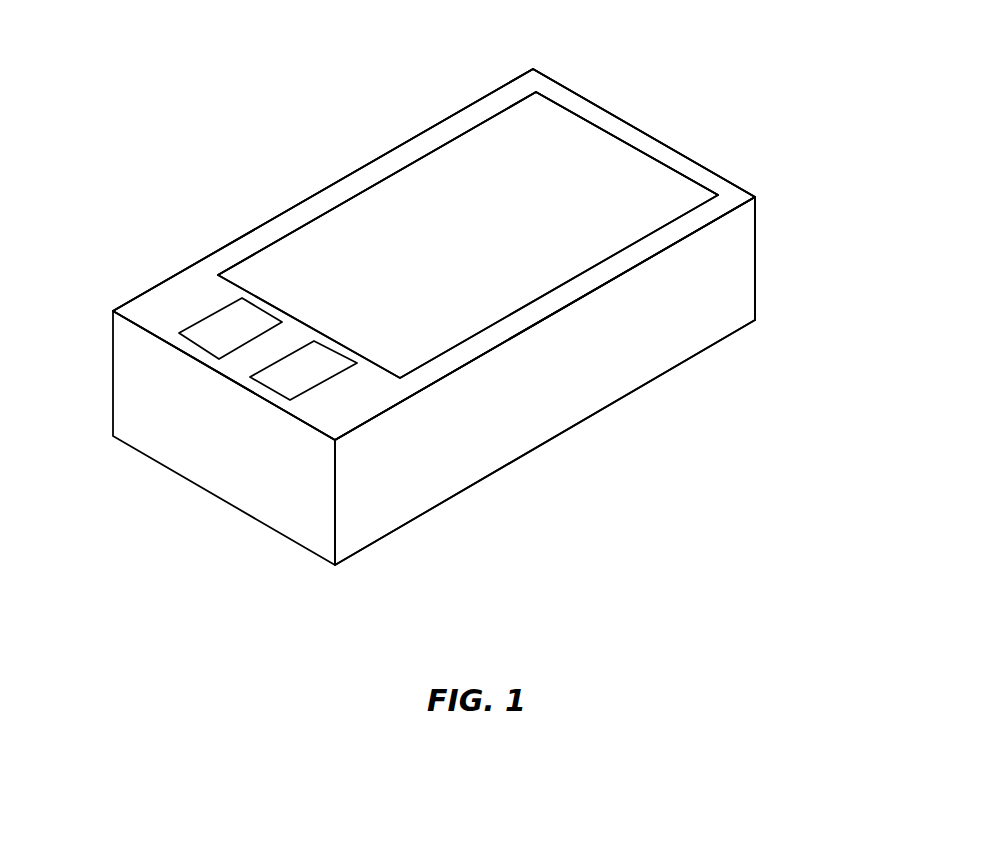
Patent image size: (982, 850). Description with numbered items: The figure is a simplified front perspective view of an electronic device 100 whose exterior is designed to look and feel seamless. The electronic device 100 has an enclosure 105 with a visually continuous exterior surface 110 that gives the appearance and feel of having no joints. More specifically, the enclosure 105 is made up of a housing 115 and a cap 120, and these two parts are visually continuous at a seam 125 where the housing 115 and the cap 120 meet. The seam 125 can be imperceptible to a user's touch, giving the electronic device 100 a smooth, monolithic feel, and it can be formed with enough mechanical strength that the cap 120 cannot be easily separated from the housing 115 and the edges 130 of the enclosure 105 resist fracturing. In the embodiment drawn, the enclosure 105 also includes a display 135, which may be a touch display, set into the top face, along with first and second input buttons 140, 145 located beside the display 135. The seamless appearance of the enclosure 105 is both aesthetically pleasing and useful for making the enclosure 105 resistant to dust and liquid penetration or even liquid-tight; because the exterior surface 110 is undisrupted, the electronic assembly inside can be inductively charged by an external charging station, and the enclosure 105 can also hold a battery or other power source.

The electronic device 100 is at (669, 36).
The enclosure 105 is at (722, 328).
The visually continuous exterior surface 110 is at (703, 292).
The housing 115 is at (757, 243).
The cap 120 is at (483, 110).
The seam 125 is at (308, 198).
The edges 130 is at (670, 145).
The display 135 is at (447, 192).
The first input button 140 is at (207, 340).
The second input button 145 is at (277, 387).